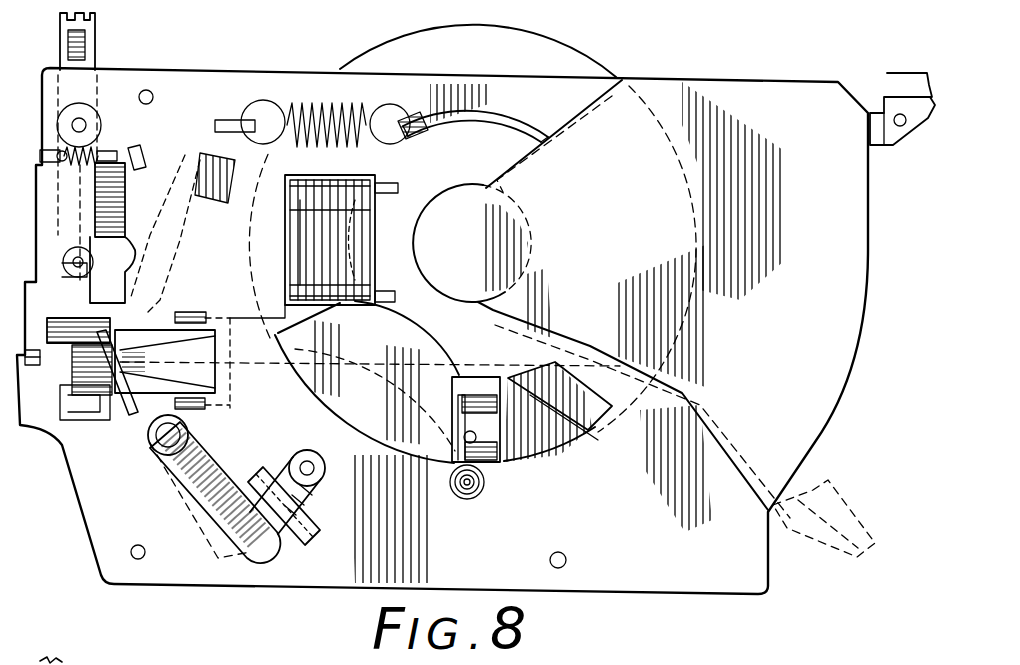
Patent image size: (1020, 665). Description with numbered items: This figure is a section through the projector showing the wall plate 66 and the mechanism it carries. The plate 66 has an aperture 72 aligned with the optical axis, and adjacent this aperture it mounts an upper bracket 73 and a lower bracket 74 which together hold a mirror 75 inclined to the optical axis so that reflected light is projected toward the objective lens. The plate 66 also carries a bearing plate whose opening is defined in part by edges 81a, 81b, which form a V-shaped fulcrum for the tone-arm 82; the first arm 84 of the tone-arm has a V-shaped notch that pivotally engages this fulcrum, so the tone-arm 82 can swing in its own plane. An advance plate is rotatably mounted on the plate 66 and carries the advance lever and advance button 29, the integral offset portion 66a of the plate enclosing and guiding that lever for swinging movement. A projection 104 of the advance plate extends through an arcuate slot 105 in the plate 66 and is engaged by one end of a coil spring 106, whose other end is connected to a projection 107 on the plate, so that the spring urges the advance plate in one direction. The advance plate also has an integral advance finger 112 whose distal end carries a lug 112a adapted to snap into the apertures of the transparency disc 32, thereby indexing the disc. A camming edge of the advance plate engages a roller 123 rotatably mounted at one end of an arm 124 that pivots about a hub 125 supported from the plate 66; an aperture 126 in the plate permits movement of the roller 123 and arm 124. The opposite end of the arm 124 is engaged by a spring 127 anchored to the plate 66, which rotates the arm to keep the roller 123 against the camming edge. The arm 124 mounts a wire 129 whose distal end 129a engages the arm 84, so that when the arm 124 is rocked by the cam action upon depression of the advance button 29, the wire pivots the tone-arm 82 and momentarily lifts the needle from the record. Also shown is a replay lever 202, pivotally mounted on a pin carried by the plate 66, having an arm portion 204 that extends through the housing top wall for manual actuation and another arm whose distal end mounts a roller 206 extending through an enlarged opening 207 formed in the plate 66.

The wall plate 66 is at (652, 557).
The integral offset portion 66a is at (776, 368).
The transparency disc 32 is at (557, 62).
The tone-arm 82 is at (346, 371).
The arcuate slot 105 is at (515, 111).
The projection 104 is at (423, 126).
The coil spring 106 is at (318, 100).
The projection 107 is at (233, 120).
The aperture 72 is at (374, 262).
The upper bracket 73 is at (388, 183).
The lower bracket 74 is at (390, 303).
The mirror 75 is at (298, 228).
The advance finger 112 is at (483, 437).
The lug 112a is at (462, 430).
The first arm 84 is at (203, 377).
The bearing plate edge 81a is at (200, 338).
The bearing plate edge 81b is at (218, 394).
The replay lever 202 is at (99, 26).
The arm portion 204 is at (89, 53).
The spring 127 is at (100, 152).
The roller 206 is at (89, 200).
The enlarged opening 207 is at (138, 257).
The distal end of wire 129a is at (167, 301).
The wire 129 is at (150, 435).
The hub 125 is at (172, 440).
The arm 124 is at (197, 497).
The roller 123 is at (318, 474).
The aperture 126 is at (286, 545).
The advance button 29 is at (915, 135).